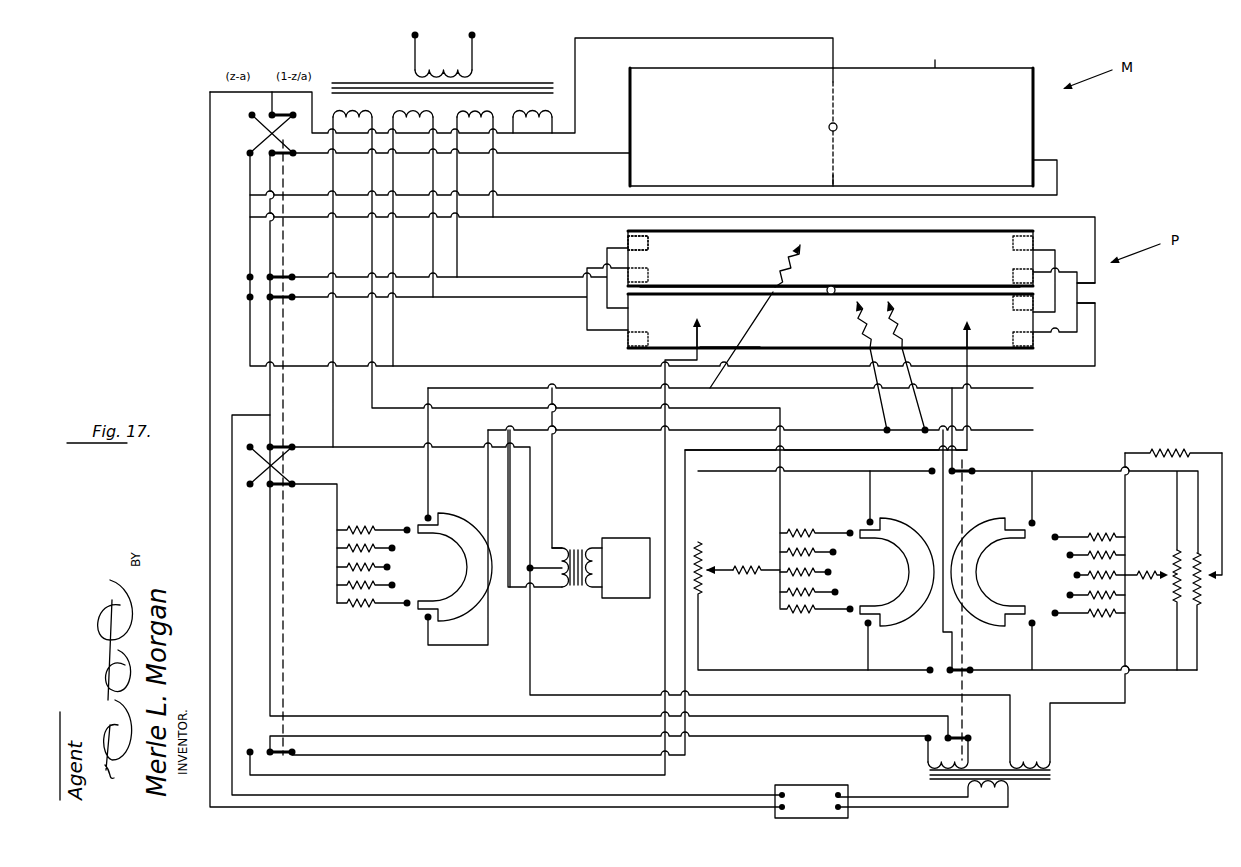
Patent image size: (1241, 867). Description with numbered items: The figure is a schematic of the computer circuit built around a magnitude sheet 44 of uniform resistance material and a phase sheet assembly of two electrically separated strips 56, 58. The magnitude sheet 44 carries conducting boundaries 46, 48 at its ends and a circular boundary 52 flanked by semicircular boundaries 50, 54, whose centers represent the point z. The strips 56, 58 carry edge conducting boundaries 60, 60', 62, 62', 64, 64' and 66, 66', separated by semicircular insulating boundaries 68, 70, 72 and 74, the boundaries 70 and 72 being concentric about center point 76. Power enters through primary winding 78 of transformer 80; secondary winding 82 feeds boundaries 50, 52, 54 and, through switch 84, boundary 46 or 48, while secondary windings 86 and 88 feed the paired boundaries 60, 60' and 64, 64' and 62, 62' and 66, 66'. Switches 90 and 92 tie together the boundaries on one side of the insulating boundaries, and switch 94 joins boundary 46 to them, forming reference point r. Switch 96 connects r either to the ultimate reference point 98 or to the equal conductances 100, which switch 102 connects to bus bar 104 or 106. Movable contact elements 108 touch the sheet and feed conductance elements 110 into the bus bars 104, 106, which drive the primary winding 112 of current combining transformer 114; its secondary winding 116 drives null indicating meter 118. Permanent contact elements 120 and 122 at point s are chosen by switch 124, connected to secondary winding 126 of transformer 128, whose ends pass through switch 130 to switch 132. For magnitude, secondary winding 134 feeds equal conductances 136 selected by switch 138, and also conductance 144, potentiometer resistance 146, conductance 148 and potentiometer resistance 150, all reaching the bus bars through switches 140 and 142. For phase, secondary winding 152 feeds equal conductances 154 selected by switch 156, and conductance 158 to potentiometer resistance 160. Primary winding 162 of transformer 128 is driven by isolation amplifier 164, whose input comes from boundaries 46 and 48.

The magnitude sheet 44 is at (831, 110).
The conducting boundary 46 is at (630, 112).
The conducting boundary 48 is at (1033, 130).
The conducting boundary 50 is at (835, 72).
The conducting boundary 52 is at (838, 128).
The conducting boundary 54 is at (835, 184).
The elongated strip 56 is at (628, 240).
The elongated strip 58 is at (628, 342).
The conducting boundary 60 is at (990, 246).
The conducting boundary 60' is at (999, 272).
The conducting boundary 62 is at (973, 282).
The conducting boundary 62' is at (1008, 335).
The conducting boundary 64 is at (670, 242).
The conducting boundary 64' is at (660, 271).
The conducting boundary 66 is at (830, 271).
The conducting boundary 66' is at (746, 334).
The insulating boundary 68 is at (835, 233).
The insulating boundary 70 is at (835, 288).
The insulating boundary 72 is at (825, 294).
The insulating boundary 74 is at (830, 348).
The center point 76 is at (830, 285).
The primary winding 78 is at (472, 60).
The transformer 80 is at (510, 77).
The secondary winding 82 is at (532, 124).
The switch 84 is at (275, 114).
The secondary winding 86 is at (475, 122).
The secondary winding 88 is at (413, 122).
The switch 90 is at (293, 274).
The switch 92 is at (293, 300).
The switch 94 is at (295, 156).
The switch 96 is at (293, 444).
The ultimate reference point 98 is at (520, 590).
The equal conductances 100 is at (345, 595).
The switch 102 is at (458, 518).
The bus bar 104 is at (1033, 390).
The bus bar 106 is at (1033, 432).
The movable contact elements 108 is at (797, 246).
The conductance elements 110 is at (786, 268).
The primary winding 112 is at (556, 545).
The current combining transformer 114 is at (578, 594).
The secondary winding 116 is at (590, 546).
The null indicating meter 118 is at (636, 538).
The permanent contact element 120 is at (694, 320).
The permanent contact element 122 is at (970, 324).
The switch 124 is at (290, 748).
The secondary winding 126 is at (925, 762).
The transformer 128 is at (1070, 775).
The switch 130 is at (968, 735).
The switch 132 is at (290, 488).
The secondary winding 134 is at (1050, 762).
The equal conductances 136 is at (1090, 570).
The switch 138 is at (995, 522).
The switch 140 is at (972, 468).
The switch 142 is at (968, 666).
The conductance 144 is at (1163, 582).
The potentiometer resistance 146 is at (1172, 560).
The conductance 148 is at (1172, 450).
The potentiometer resistance 150 is at (1199, 596).
The secondary winding 152 is at (325, 95).
The equal conductances 154 is at (822, 556).
The switch 156 is at (905, 522).
The conductance 158 is at (750, 578).
The potentiometer resistance 160 is at (705, 555).
The primary winding 162 is at (1010, 790).
The isolation amplifier 164 is at (812, 786).